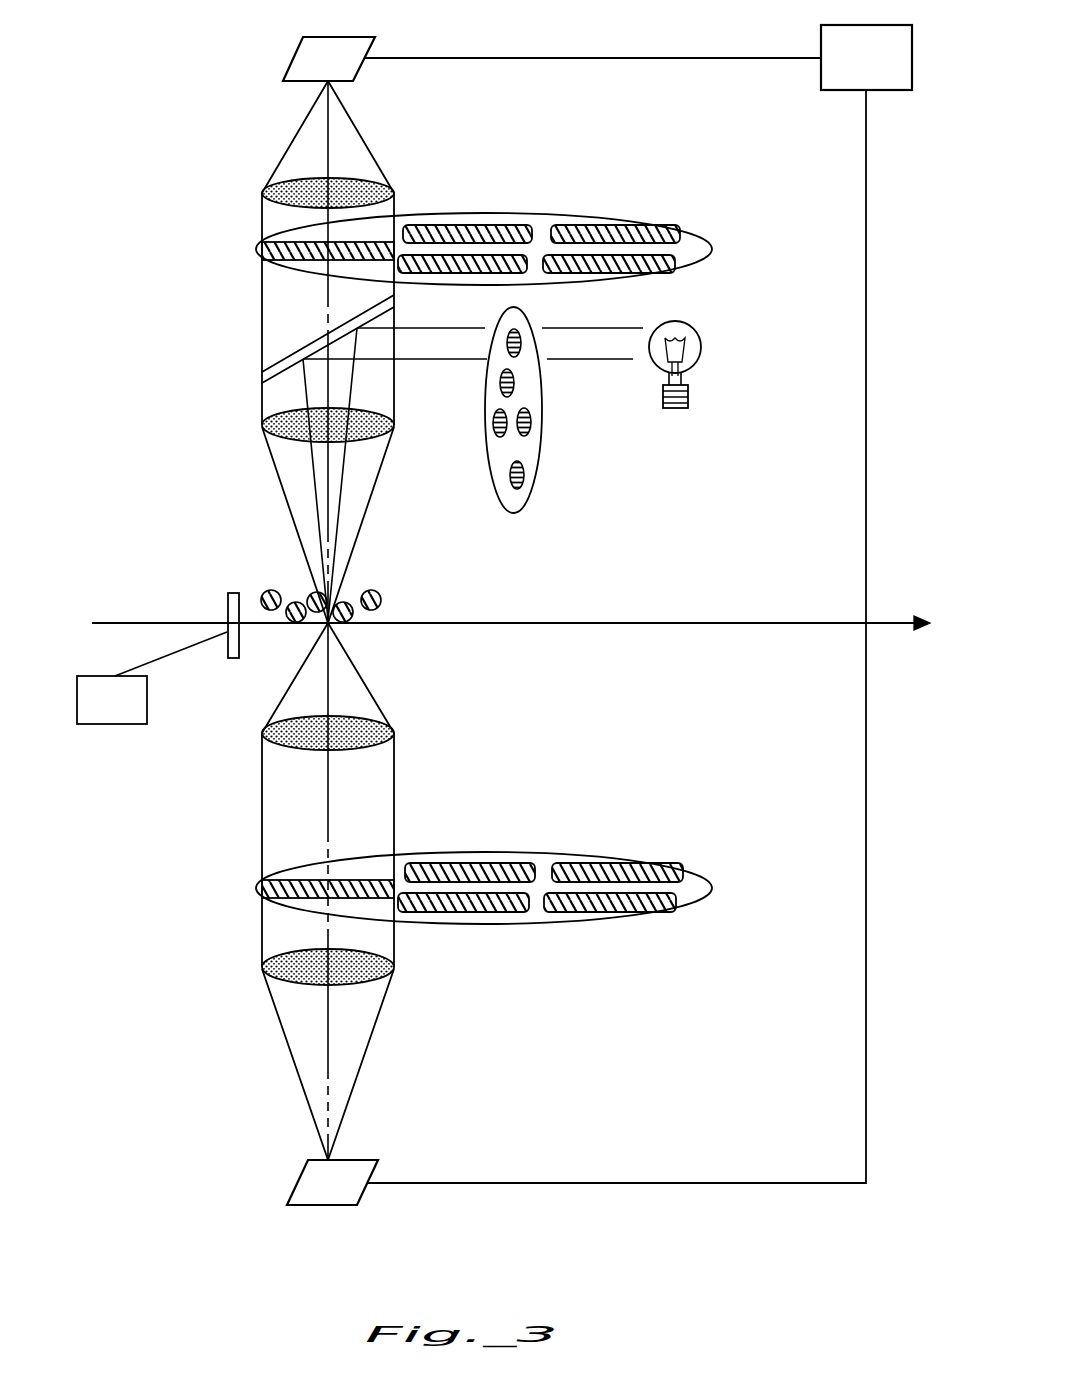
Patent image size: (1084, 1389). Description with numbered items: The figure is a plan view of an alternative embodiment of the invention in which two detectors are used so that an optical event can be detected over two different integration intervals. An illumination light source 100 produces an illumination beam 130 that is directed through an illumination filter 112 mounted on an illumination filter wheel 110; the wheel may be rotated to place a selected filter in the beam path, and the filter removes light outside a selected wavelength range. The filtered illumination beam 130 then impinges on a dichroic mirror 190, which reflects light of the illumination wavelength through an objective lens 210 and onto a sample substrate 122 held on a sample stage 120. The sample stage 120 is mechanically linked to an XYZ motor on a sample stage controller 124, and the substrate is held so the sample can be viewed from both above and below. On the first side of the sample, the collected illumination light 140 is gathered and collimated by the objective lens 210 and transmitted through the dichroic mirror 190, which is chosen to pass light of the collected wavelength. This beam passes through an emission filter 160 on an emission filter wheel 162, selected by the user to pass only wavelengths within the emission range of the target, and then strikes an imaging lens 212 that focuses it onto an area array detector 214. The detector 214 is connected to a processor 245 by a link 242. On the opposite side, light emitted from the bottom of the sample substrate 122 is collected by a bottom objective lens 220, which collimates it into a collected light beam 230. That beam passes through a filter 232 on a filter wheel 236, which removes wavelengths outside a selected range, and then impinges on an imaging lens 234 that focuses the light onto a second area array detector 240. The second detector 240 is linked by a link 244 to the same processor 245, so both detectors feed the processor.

The illumination light source 100 is at (702, 355).
The illumination filter wheel 110 is at (540, 466).
The illumination filter 112 is at (525, 330).
The sample stage 120 is at (231, 593).
The sample substrate 122 is at (296, 621).
The sample stage controller 124 is at (113, 724).
The illumination beam 130 is at (588, 361).
The collected illumination light 140 is at (283, 497).
The emission filter 160 is at (262, 261).
The emission filter wheel 162 is at (697, 226).
The dichroic mirror 190 is at (262, 374).
The objective lens 210 is at (262, 426).
The imaging lens 212 is at (262, 193).
The area array detector 214 is at (298, 61).
The bottom objective lens 220 is at (262, 733).
The collimated collected light beam 230 is at (262, 793).
The filter 232 is at (262, 899).
The imaging lens 234 is at (262, 967).
The filter wheel 236 is at (700, 866).
The second area array detector 240 is at (296, 1186).
The link 242 is at (590, 58).
The link 244 is at (868, 322).
The processor 245 is at (885, 68).